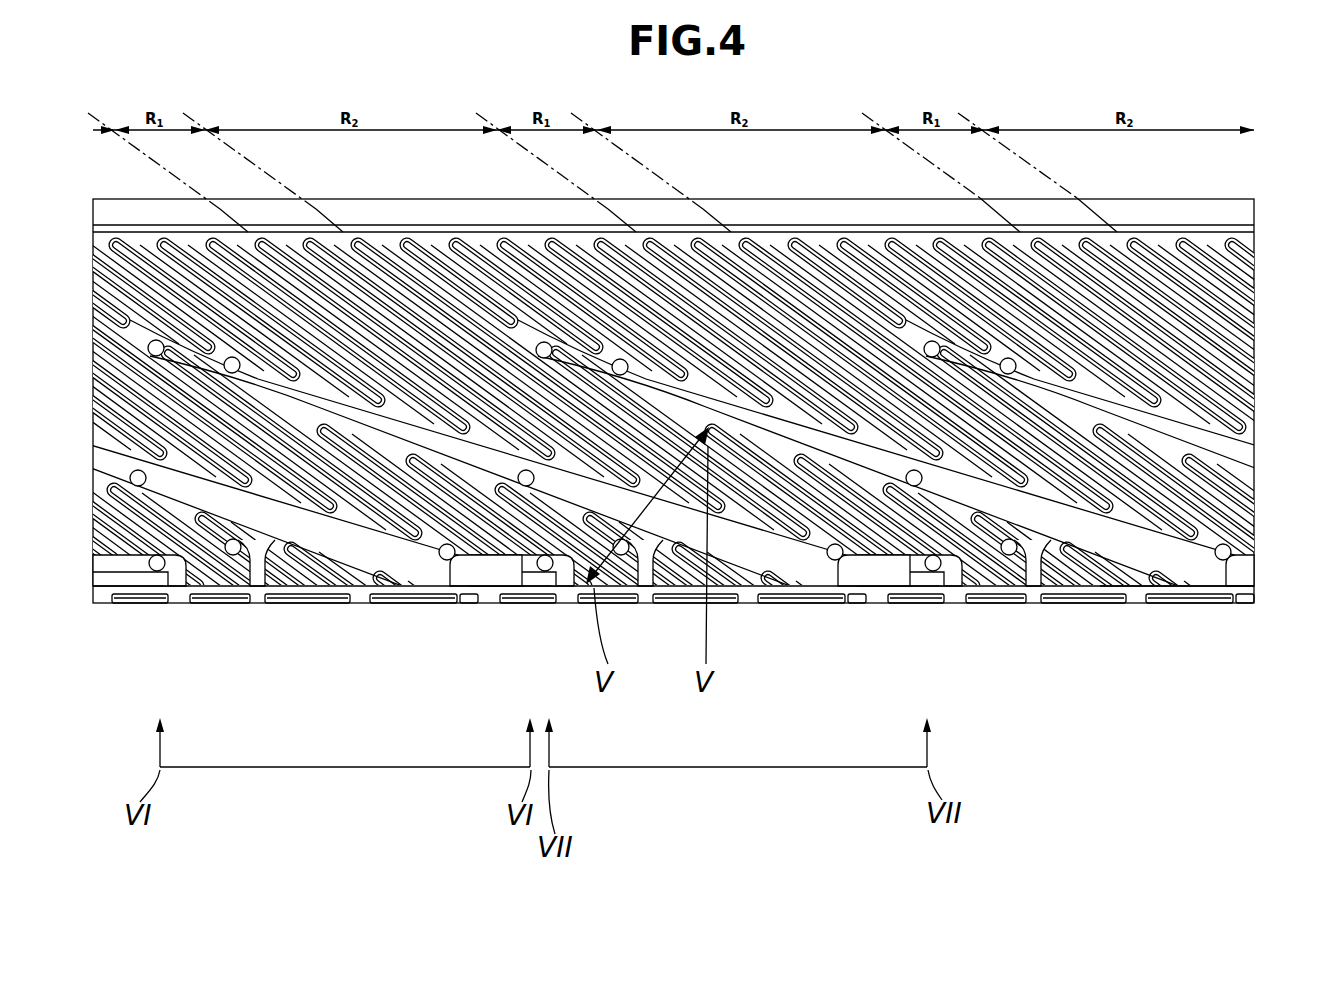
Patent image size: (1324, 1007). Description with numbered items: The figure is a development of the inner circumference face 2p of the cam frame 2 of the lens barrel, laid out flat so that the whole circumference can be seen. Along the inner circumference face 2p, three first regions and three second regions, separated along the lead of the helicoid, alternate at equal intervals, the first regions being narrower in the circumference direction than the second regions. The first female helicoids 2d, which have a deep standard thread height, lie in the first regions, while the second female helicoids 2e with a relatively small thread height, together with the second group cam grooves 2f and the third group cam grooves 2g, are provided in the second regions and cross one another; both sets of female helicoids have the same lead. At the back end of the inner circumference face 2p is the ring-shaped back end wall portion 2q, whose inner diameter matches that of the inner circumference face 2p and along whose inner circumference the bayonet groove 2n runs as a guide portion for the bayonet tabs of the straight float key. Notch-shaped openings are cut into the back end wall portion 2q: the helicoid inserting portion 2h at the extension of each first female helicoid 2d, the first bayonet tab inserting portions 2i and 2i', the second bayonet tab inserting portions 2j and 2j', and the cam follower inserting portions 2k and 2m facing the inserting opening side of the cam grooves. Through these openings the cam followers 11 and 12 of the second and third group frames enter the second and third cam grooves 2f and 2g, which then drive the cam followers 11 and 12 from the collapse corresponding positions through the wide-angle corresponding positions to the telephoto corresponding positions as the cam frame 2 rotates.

The cam frame 2 is at (1200, 199).
The first female helicoids 2d is at (262, 216).
The second female helicoids 2e is at (345, 242).
The second group cam grooves 2f is at (152, 340).
The third group cam grooves 2g is at (103, 242).
The helicoid inserting portion 2h is at (404, 604).
The bayonet tab inserting portions 2i is at (706, 630).
The bayonet tab inserting portion 2i' is at (716, 630).
The bayonet tab inserting portions 2j is at (363, 630).
The bayonet tab inserting portion 2j' is at (686, 630).
The second group cam follower inserting portion 2k is at (256, 604).
The third group cam follower inserting portion 2m is at (176, 604).
The bayonet groove 2n is at (1171, 604).
The inner circumference face 2p is at (1240, 584).
The back end wall portion 2q is at (1256, 604).
The cam followers 11 is at (440, 246).
The cam followers 12 is at (403, 226).